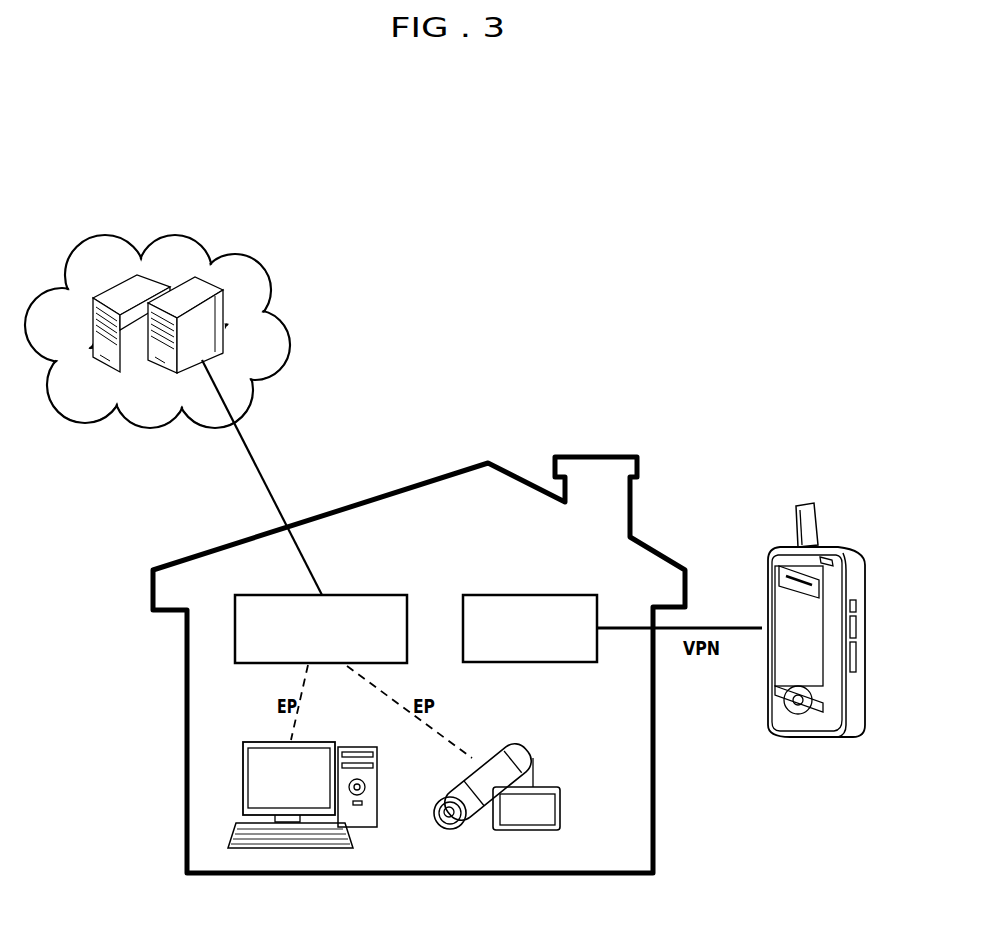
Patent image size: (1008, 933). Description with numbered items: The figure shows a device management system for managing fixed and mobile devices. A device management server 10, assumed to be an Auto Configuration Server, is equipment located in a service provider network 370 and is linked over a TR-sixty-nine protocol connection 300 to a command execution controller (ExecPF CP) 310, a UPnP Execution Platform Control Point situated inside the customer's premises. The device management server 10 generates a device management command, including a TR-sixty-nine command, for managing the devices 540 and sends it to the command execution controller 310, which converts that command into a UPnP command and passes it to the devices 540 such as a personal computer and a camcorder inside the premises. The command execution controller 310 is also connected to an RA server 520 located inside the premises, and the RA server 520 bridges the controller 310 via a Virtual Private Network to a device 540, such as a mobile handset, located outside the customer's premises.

The device management server 10 is at (136, 272).
The service provider network 370 is at (284, 338).
The TR 069 connection 300 is at (247, 438).
The command execution controller (ExecPF CP) 310 is at (373, 595).
The RA server 520 is at (560, 595).
The devices 540 is at (843, 558).